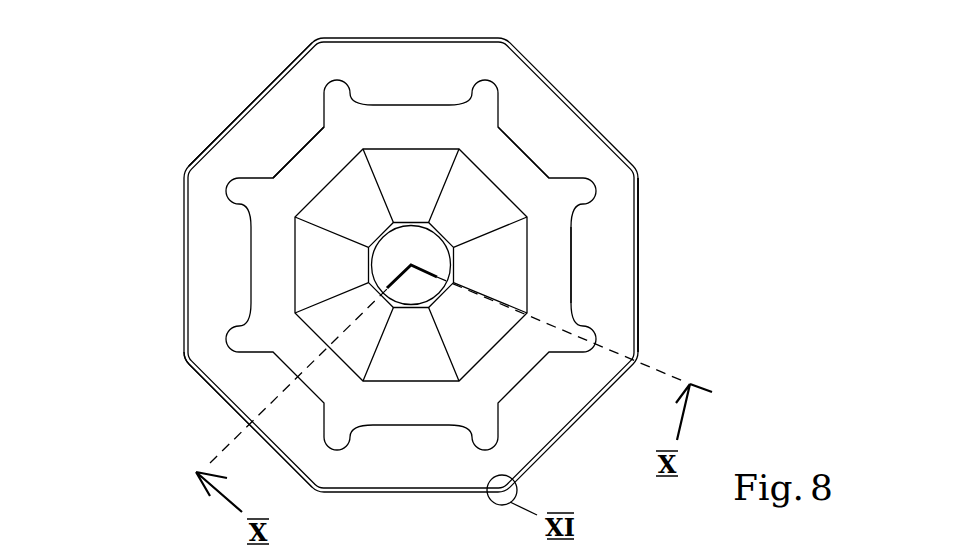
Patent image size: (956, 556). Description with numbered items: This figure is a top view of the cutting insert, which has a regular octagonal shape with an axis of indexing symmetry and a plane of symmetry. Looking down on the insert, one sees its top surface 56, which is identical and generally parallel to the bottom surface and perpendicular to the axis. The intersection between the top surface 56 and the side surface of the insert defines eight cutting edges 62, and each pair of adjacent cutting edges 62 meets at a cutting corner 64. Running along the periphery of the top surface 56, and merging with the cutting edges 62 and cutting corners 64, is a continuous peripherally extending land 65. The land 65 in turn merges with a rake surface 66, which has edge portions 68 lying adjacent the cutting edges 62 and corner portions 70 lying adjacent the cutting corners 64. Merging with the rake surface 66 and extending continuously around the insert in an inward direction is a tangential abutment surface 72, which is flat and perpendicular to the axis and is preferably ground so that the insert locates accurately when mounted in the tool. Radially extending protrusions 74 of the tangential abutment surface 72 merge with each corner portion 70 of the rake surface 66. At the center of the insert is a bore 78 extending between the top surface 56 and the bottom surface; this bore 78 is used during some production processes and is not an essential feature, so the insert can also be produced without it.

The top surface 56 is at (525, 163).
The cutting edges 62 is at (183, 260).
The cutting corner 64 is at (180, 357).
The land 65 is at (637, 217).
The rake surface 66 is at (612, 280).
The edge portions 68 is at (272, 132).
The corner portions 70 is at (323, 60).
The tangential abutment surface 72 is at (273, 225).
The radially extending protrusions 74 is at (480, 93).
The bore 78 is at (387, 262).